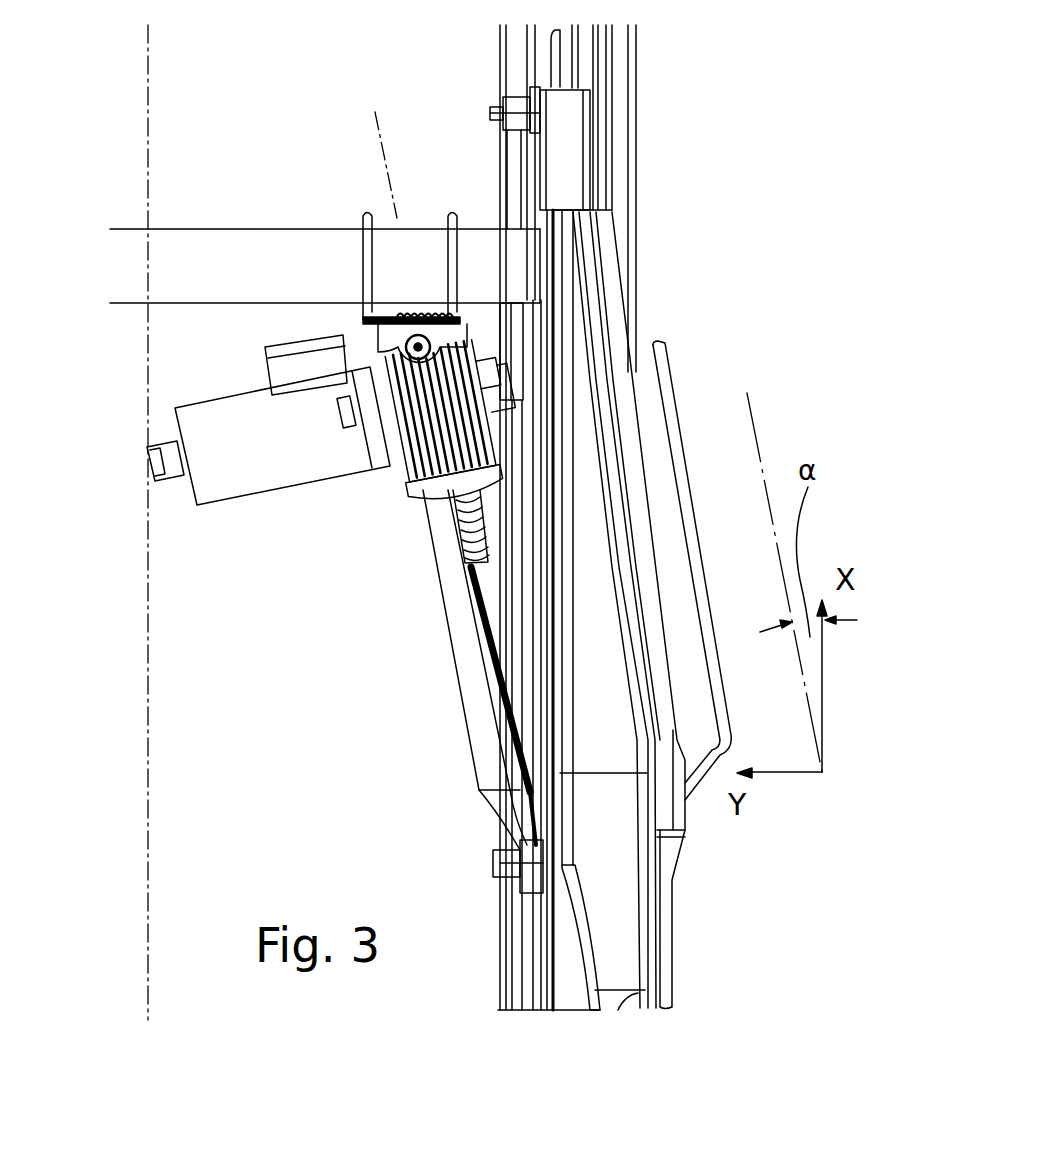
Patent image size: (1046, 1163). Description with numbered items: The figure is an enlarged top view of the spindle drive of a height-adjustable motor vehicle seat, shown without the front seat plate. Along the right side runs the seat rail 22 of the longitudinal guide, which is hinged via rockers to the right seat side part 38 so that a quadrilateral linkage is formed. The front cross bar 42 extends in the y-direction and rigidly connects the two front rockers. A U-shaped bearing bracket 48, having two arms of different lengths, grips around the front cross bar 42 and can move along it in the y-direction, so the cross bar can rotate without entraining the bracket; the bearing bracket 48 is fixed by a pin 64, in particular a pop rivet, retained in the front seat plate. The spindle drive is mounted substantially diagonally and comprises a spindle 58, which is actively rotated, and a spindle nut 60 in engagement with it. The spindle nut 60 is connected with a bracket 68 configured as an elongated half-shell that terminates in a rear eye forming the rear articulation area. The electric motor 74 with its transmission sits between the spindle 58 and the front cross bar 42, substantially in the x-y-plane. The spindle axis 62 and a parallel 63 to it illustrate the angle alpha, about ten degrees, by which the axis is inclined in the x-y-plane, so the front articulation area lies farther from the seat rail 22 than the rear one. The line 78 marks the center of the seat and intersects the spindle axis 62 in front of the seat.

The seat rail 22 is at (620, 68).
The right seat side part 38 is at (585, 405).
The front cross bar 42 is at (185, 290).
The bearing bracket 48 is at (370, 249).
The spindle 58 is at (510, 717).
The spindle nut 60 is at (467, 542).
The spindle axis 62 is at (372, 130).
The parallel to the spindle axis 63 is at (747, 393).
The pin 64 is at (418, 335).
The bracket 68 is at (483, 727).
The electric motor 74 is at (222, 453).
The line 78 is at (148, 698).